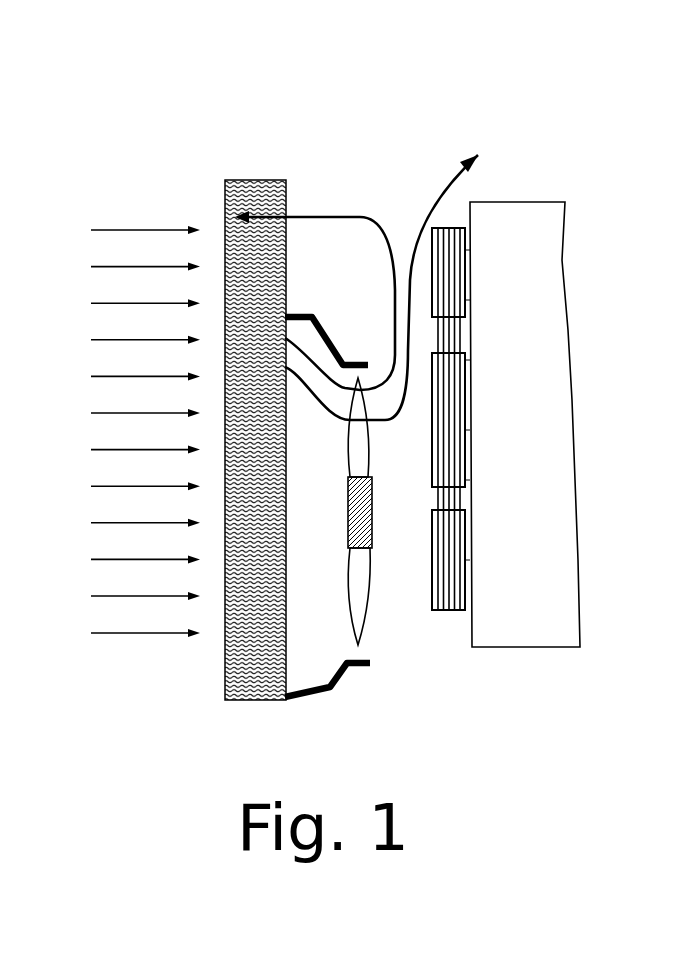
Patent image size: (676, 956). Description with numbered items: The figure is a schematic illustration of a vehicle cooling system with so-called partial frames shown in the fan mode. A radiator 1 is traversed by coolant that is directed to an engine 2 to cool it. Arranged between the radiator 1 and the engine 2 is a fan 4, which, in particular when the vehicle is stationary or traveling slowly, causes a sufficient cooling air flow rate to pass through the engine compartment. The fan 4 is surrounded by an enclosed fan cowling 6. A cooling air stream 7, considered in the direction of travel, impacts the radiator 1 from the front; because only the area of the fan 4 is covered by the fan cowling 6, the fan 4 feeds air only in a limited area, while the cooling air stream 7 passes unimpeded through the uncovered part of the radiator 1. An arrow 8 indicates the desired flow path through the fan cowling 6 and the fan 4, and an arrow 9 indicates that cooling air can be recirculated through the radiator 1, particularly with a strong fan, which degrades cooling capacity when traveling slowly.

The radiator 1 is at (257, 200).
The engine 2 is at (528, 285).
The fan 4 is at (358, 598).
The fan cowling 6 is at (312, 315).
The cooling air stream 7 is at (133, 662).
The arrow 8 is at (430, 190).
The arrow 9 is at (311, 217).